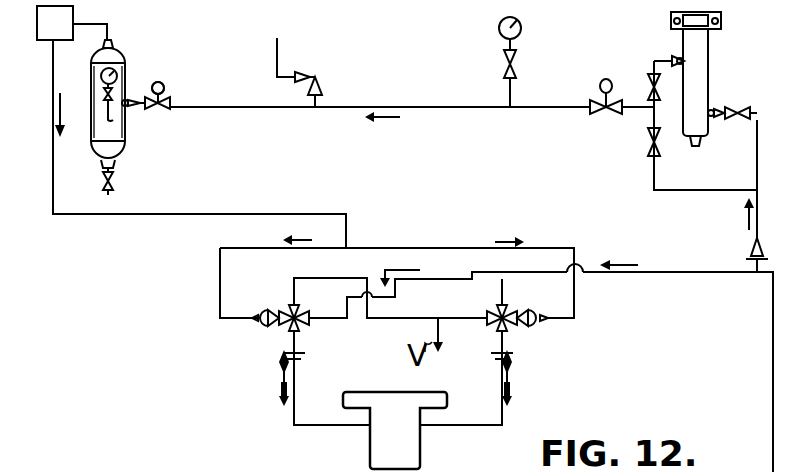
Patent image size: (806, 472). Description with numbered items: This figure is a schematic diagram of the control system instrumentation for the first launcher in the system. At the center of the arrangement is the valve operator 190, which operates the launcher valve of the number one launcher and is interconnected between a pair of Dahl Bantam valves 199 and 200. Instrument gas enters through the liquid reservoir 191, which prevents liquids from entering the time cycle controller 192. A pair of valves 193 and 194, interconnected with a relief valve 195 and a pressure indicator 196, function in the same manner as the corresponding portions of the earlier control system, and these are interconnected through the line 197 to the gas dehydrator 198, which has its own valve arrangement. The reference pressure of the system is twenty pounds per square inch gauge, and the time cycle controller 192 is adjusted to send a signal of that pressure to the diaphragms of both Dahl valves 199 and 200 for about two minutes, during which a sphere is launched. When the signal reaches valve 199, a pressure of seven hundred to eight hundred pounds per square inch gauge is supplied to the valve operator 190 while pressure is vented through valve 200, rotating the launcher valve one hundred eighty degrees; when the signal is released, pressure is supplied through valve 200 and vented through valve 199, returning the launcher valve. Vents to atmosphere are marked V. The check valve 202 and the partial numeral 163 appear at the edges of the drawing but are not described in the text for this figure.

The valve operator 190 is at (408, 447).
The liquid reservoir 191 is at (127, 52).
The time cycle controller 192 is at (37, 24).
The valve 193 is at (158, 107).
The valve 194 is at (604, 110).
The relief valve 195 is at (310, 74).
The pressure indicator 196 is at (521, 23).
The line 197 is at (472, 108).
The gas dehydrator 198 is at (709, 86).
The Dahl Bantam valve 199 is at (533, 326).
The Dahl Bantam valve 200 is at (270, 326).
The check valve 202 is at (748, 249).
The element 163 is at (103, 460).